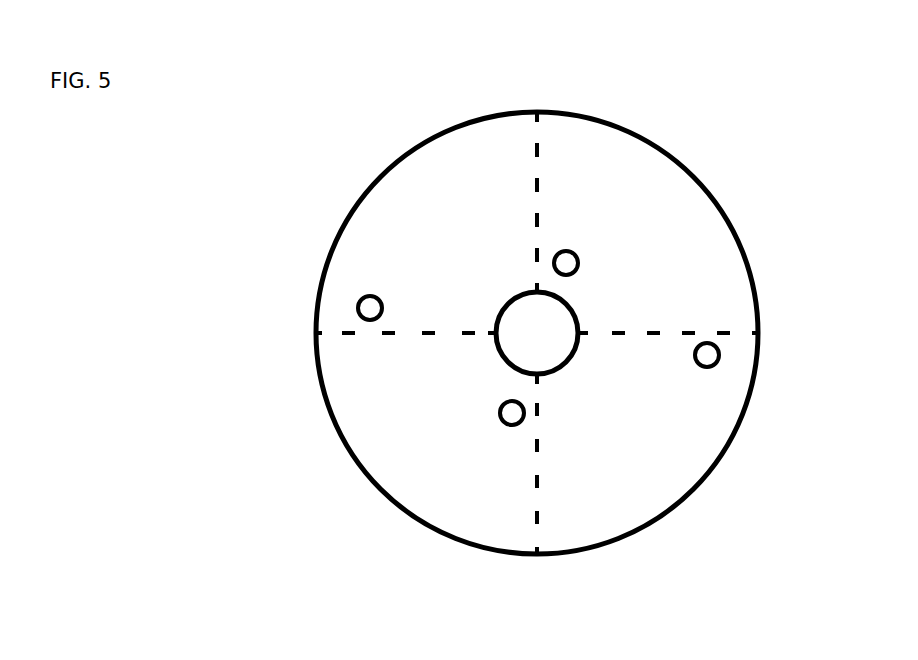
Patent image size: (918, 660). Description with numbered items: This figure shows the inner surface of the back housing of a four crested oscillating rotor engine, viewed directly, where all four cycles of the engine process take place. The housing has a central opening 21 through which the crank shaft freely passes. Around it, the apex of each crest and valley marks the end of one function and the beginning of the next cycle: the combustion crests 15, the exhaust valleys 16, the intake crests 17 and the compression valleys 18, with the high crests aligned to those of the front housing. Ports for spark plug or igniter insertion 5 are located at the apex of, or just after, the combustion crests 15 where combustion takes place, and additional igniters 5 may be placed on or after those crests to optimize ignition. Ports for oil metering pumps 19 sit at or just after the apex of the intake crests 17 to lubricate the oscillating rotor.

The spark plug/igniter port 5 is at (366, 302).
The combustion crest 15 is at (738, 328).
The exhaust valley 16 is at (393, 205).
The intake crest 17 is at (538, 140).
The compression valley 18 is at (682, 208).
The oil metering pump port 19 is at (566, 263).
The crank shaft passage 21 is at (538, 332).